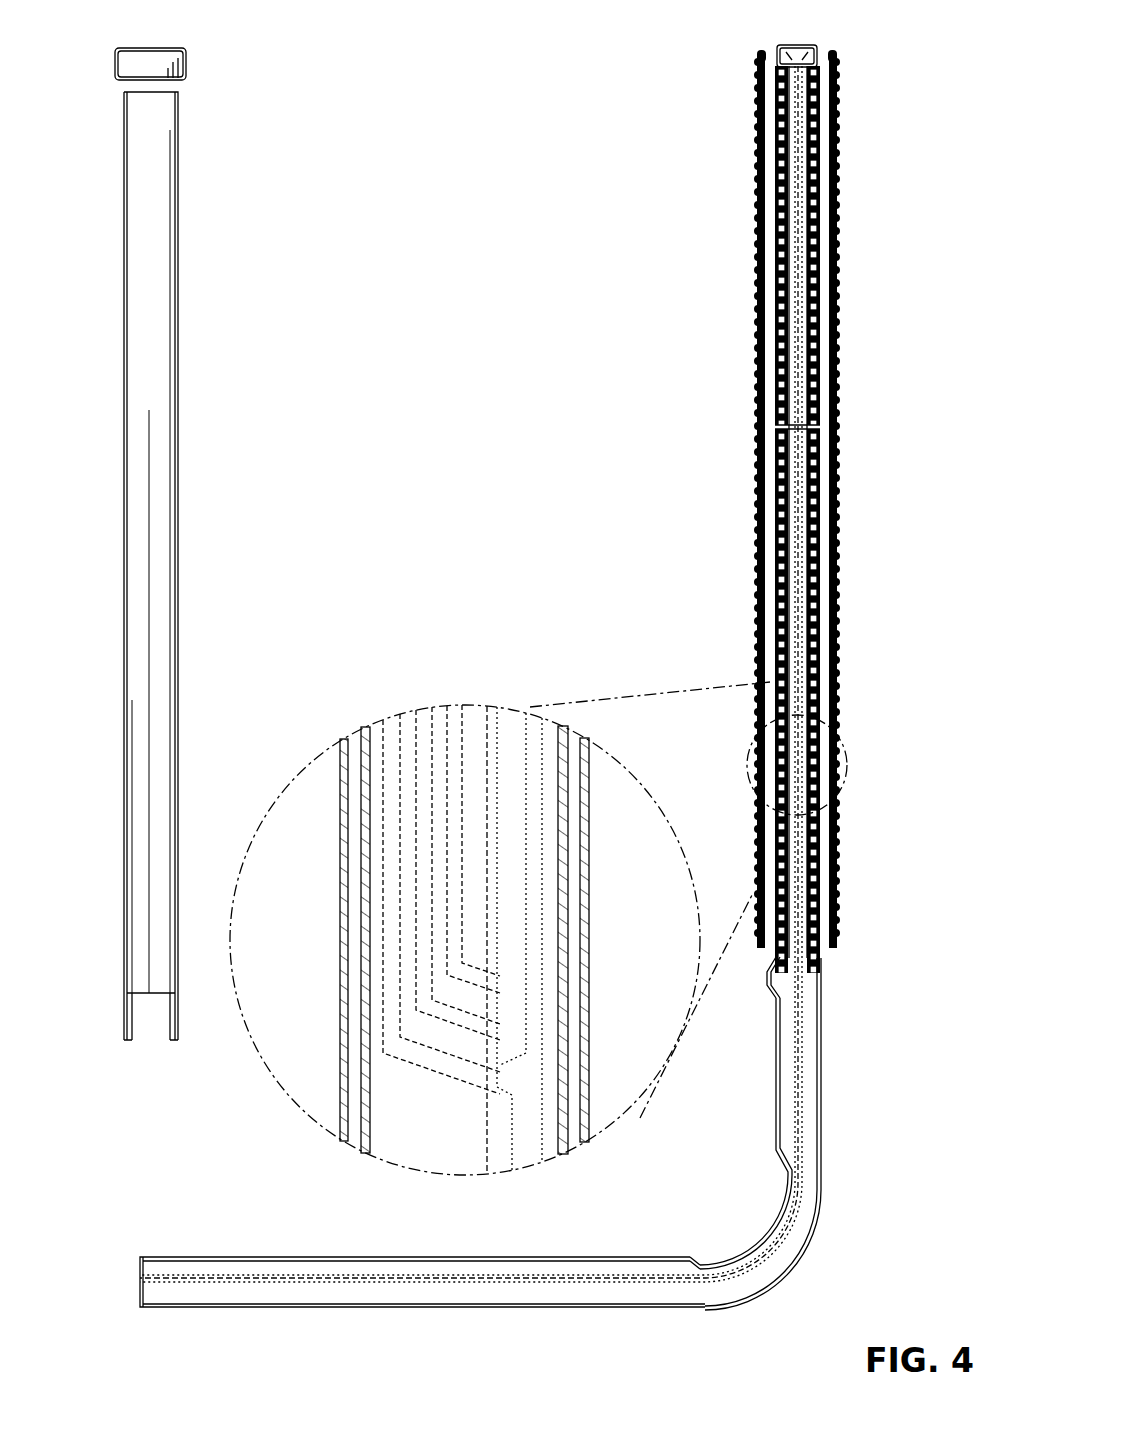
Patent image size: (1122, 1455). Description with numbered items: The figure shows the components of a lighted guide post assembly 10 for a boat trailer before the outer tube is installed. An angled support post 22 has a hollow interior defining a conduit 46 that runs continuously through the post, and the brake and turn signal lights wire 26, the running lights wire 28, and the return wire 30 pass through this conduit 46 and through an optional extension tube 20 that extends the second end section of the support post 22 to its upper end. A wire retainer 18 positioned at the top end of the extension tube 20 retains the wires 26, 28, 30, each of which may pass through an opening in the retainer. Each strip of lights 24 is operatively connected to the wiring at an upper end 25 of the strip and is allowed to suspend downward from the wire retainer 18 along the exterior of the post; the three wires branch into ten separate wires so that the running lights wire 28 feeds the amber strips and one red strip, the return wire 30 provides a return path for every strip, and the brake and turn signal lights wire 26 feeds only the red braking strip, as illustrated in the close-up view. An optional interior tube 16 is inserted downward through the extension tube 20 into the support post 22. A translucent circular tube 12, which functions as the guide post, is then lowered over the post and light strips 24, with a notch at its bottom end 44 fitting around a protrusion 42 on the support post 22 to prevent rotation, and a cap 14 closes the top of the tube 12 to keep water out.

The lighted guide post assembly 10 is at (141, 36).
The translucent circular tube 12 is at (156, 200).
The cap 14 is at (187, 65).
The interior tube 16 is at (815, 722).
The wire retainer 18 is at (797, 46).
The extension tube 20 is at (834, 388).
The angled support post 22 is at (820, 1044).
The strip of lights 24 is at (772, 206).
The upper end of the strip of lights 25 is at (765, 62).
The brake and turn signal lights wire 26 is at (108, 1250).
The running lights wire 28 is at (140, 1279).
The return wire 30 is at (140, 1285).
The protrusion 42 is at (768, 980).
The bottom end of the tube 44 is at (151, 1028).
The conduit 46 is at (612, 1294).